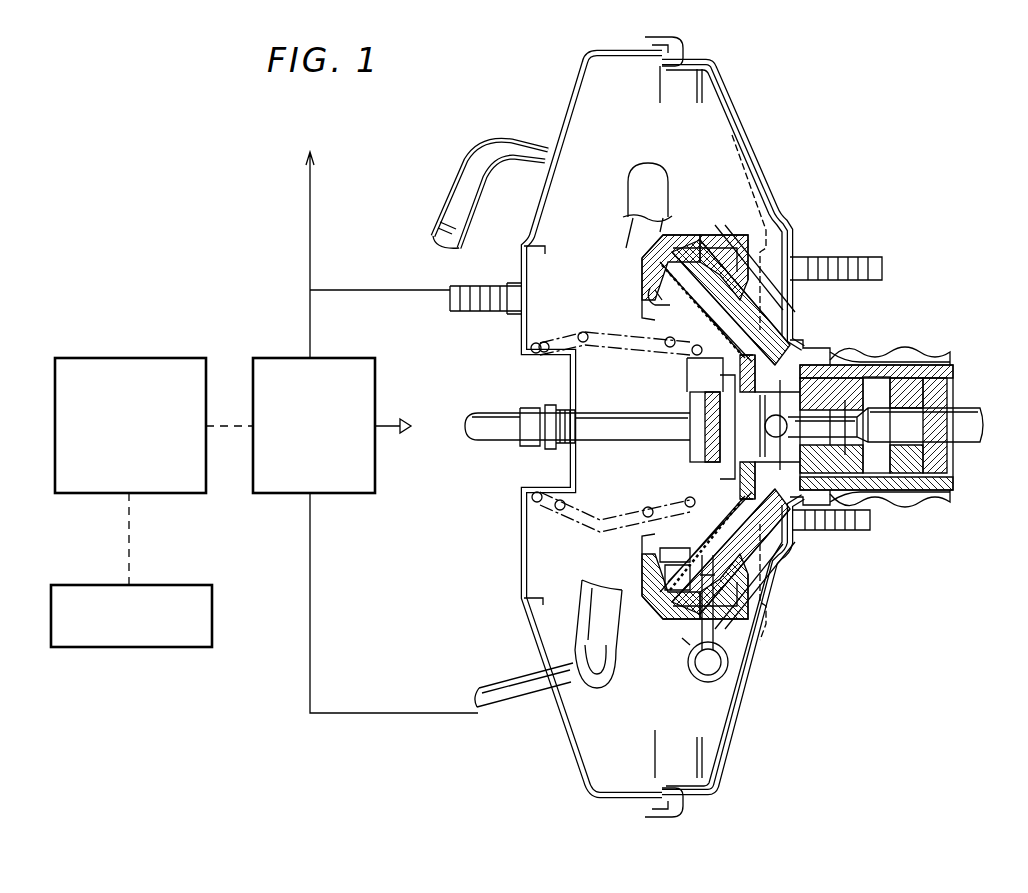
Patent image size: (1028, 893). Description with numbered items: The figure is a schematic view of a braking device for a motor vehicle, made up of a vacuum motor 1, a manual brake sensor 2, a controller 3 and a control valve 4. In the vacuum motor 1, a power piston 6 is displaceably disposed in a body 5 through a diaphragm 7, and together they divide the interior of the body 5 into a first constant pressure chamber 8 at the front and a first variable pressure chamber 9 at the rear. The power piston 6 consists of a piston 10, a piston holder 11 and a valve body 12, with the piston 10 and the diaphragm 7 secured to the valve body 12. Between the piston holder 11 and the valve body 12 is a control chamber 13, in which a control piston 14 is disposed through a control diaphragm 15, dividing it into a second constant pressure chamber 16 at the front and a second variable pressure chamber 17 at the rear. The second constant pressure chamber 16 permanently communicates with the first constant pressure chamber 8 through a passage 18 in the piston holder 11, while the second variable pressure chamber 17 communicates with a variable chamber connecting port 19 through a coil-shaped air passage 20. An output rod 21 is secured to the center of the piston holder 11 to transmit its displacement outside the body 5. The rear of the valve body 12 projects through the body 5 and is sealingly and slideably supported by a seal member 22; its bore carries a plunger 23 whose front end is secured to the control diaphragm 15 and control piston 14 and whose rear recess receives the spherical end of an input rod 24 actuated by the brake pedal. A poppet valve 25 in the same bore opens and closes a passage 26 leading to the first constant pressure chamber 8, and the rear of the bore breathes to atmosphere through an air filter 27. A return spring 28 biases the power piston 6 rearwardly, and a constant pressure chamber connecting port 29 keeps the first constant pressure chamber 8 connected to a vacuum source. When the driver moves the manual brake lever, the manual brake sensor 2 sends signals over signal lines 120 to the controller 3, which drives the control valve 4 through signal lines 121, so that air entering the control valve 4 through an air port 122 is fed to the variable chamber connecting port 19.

The vacuum motor 1 is at (808, 165).
The manual brake sensor 2 is at (118, 647).
The controller 3 is at (117, 358).
The control valve 4 is at (271, 358).
The body 5 is at (723, 63).
The power piston 6 is at (735, 132).
The diaphragm 7 is at (690, 56).
The first constant pressure chamber 8 is at (592, 88).
The first variable pressure chamber 9 is at (763, 580).
The piston 10 is at (740, 146).
The piston holder 11 is at (647, 542).
The valve body 12 is at (768, 262).
The control chamber 13 is at (800, 537).
The control piston 14 is at (700, 360).
The control diaphragm 15 is at (660, 565).
The second constant pressure chamber 16 is at (643, 308).
The second variable pressure chamber 17 is at (782, 330).
The passage 18 is at (645, 292).
The variable chamber connecting port 19 is at (493, 687).
The coil-shaped air passage 20 is at (687, 673).
The output rod 21 is at (486, 435).
The seal member 22 is at (843, 360).
The plunger 23 is at (772, 414).
The input rod 24 is at (972, 418).
The poppet valve 25 is at (873, 500).
The passage 26 is at (697, 235).
The air filter 27 is at (953, 453).
The return spring 28 is at (597, 507).
The constant pressure chamber connecting port 29 is at (453, 187).
The signal lines 120 is at (130, 552).
The signal lines 121 is at (228, 425).
The air port 122 is at (402, 433).